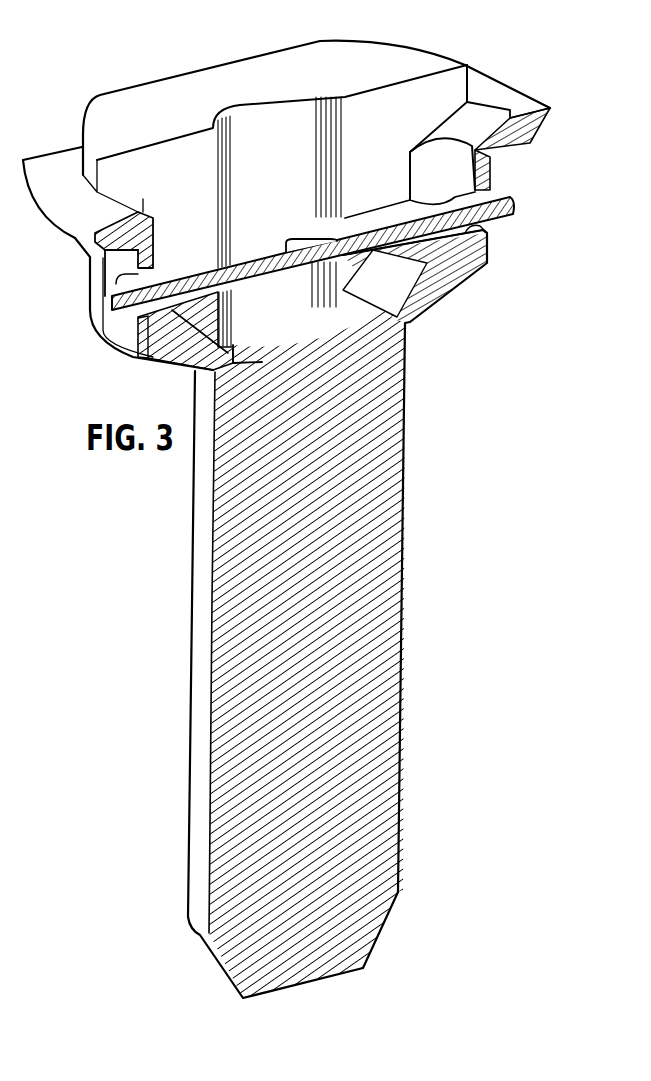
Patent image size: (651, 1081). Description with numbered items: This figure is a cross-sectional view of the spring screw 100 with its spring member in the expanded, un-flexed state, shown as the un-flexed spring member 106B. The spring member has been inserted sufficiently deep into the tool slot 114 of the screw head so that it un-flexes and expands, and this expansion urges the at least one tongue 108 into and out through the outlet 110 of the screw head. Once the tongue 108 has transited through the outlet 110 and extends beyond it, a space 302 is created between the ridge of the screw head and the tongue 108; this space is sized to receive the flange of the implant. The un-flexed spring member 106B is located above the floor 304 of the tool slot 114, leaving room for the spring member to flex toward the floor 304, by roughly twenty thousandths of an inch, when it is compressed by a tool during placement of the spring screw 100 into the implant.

The spring screw 100 is at (522, 48).
The tool slot 114 is at (271, 168).
The un-flexed spring member 106B is at (203, 265).
The tongue 108 is at (113, 312).
The outlet 110 is at (106, 336).
The space 302 is at (530, 152).
The floor 304 is at (311, 345).